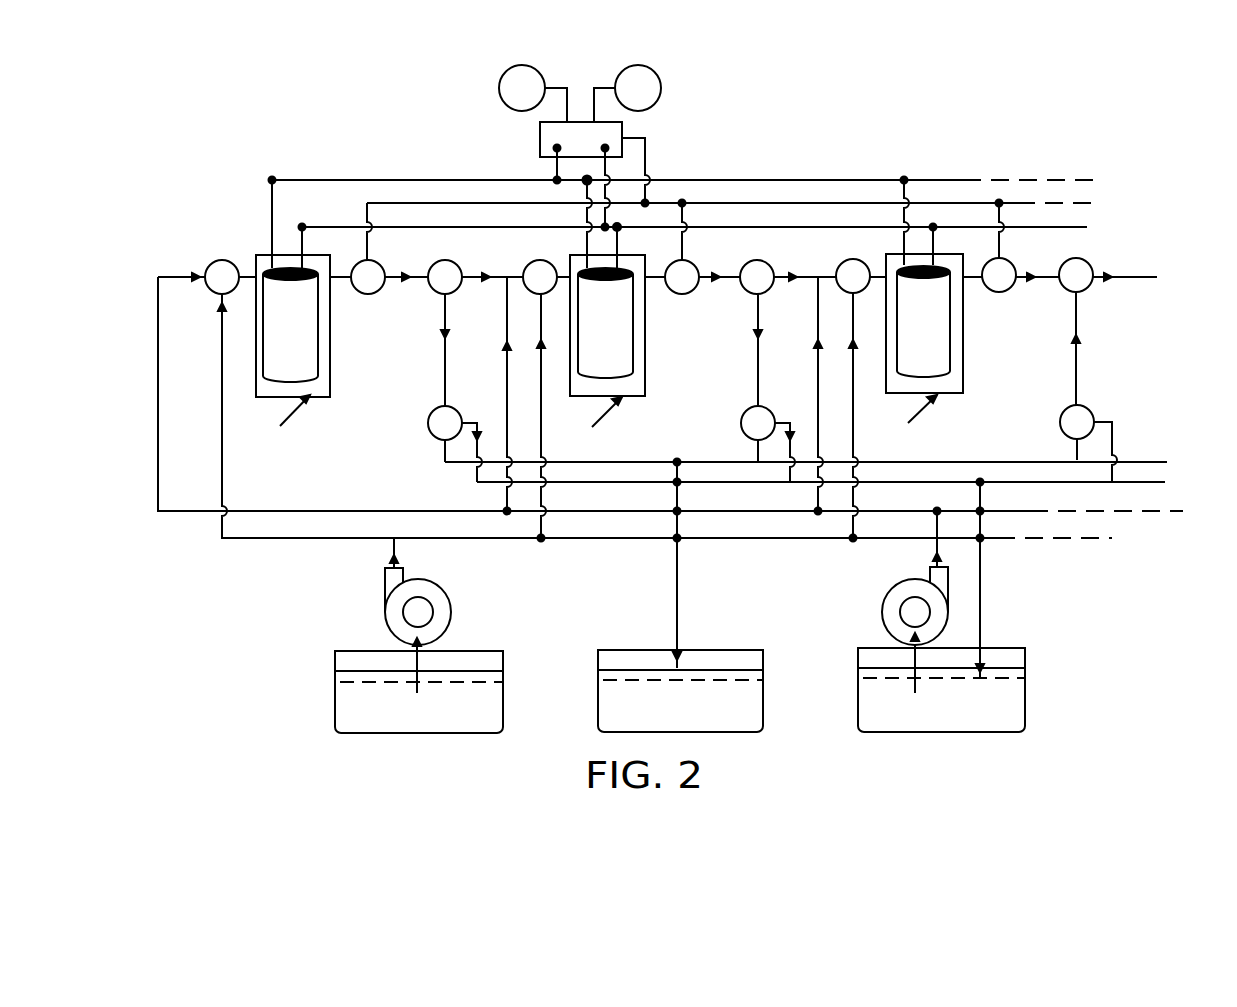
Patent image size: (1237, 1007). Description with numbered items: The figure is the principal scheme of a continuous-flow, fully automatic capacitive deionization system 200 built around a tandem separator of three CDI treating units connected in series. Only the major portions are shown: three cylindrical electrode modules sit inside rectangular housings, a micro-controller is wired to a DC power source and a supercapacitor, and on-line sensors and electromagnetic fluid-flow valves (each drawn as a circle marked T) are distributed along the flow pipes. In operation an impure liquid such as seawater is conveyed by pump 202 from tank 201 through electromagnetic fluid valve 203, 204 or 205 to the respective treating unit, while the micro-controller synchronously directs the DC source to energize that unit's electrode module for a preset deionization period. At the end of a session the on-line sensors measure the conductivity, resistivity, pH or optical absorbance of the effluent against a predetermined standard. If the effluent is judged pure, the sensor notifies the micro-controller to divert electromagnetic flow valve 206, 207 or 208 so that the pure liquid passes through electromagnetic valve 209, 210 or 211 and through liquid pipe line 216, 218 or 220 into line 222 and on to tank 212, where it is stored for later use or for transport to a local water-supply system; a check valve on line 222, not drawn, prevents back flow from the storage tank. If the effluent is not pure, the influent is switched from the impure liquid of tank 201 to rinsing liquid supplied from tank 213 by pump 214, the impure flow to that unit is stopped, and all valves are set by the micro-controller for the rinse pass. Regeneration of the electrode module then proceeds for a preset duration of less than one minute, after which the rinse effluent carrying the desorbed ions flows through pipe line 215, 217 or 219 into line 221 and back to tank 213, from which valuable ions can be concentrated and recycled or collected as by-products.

The fully automatic CDI system 200 is at (246, 97).
The tank 201 is at (335, 713).
The pump 202 is at (362, 651).
The electromagnetic fluid valve 203 is at (217, 258).
The electromagnetic fluid valve 204 is at (529, 264).
The electromagnetic fluid valve 205 is at (842, 264).
The electromagnetic flow valve 206 is at (437, 262).
The electromagnetic flow valve 207 is at (750, 262).
The electromagnetic flow valve 208 is at (1070, 262).
The electromagnetic valve 209 is at (432, 413).
The electromagnetic valve 210 is at (745, 413).
The electromagnetic valve 211 is at (1063, 413).
The tank 212 is at (597, 715).
The tank 213 is at (1025, 712).
The pump 214 is at (868, 648).
The pipe line 215 is at (492, 400).
The liquid pipe line 216 is at (445, 457).
The pipe line 217 is at (802, 398).
The liquid pipe line 218 is at (758, 457).
The pipe line 219 is at (1096, 414).
The liquid pipe line 220 is at (1077, 457).
The line 221 is at (997, 648).
The line 222 is at (679, 611).